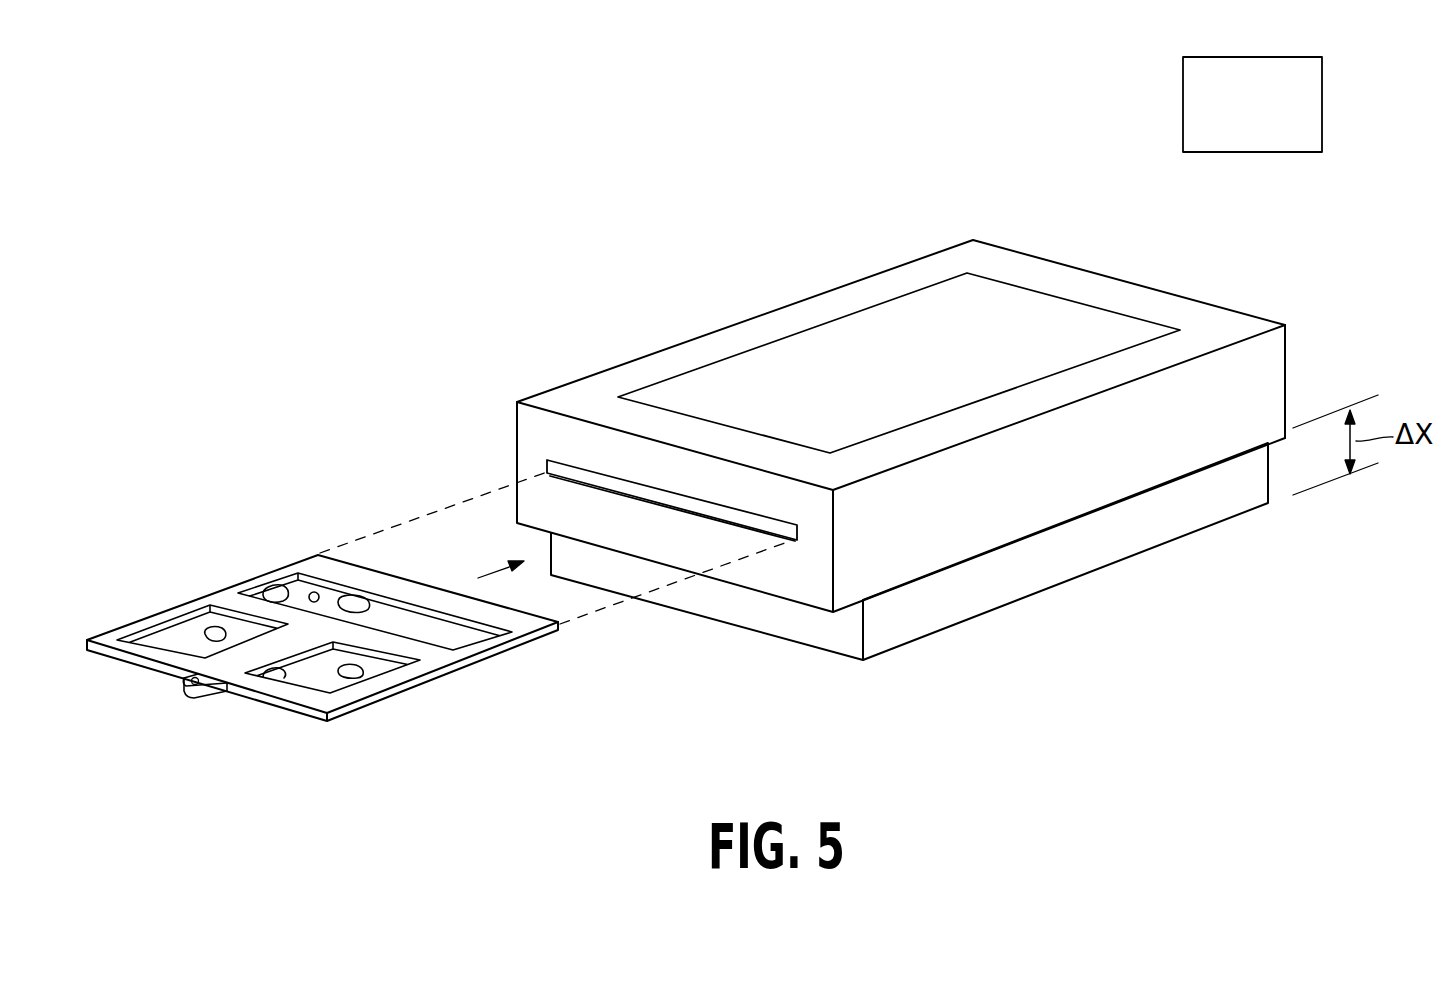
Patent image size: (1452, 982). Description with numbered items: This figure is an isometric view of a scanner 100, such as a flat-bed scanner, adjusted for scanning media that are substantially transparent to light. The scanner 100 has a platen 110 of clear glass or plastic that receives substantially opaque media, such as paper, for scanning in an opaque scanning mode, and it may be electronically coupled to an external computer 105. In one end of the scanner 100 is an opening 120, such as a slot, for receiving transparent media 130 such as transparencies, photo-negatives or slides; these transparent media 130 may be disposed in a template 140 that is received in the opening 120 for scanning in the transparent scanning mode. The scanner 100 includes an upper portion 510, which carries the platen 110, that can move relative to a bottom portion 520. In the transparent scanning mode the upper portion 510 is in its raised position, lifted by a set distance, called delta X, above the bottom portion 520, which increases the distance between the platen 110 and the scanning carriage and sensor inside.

The scanner 100 is at (979, 262).
The external computer 105 is at (1145, 283).
The platen 110 is at (752, 372).
The opening 120 is at (548, 473).
The transparent media 130 is at (302, 672).
The template 140 is at (373, 682).
The upper portion 510 is at (1290, 362).
The bottom portion 520 is at (1043, 572).